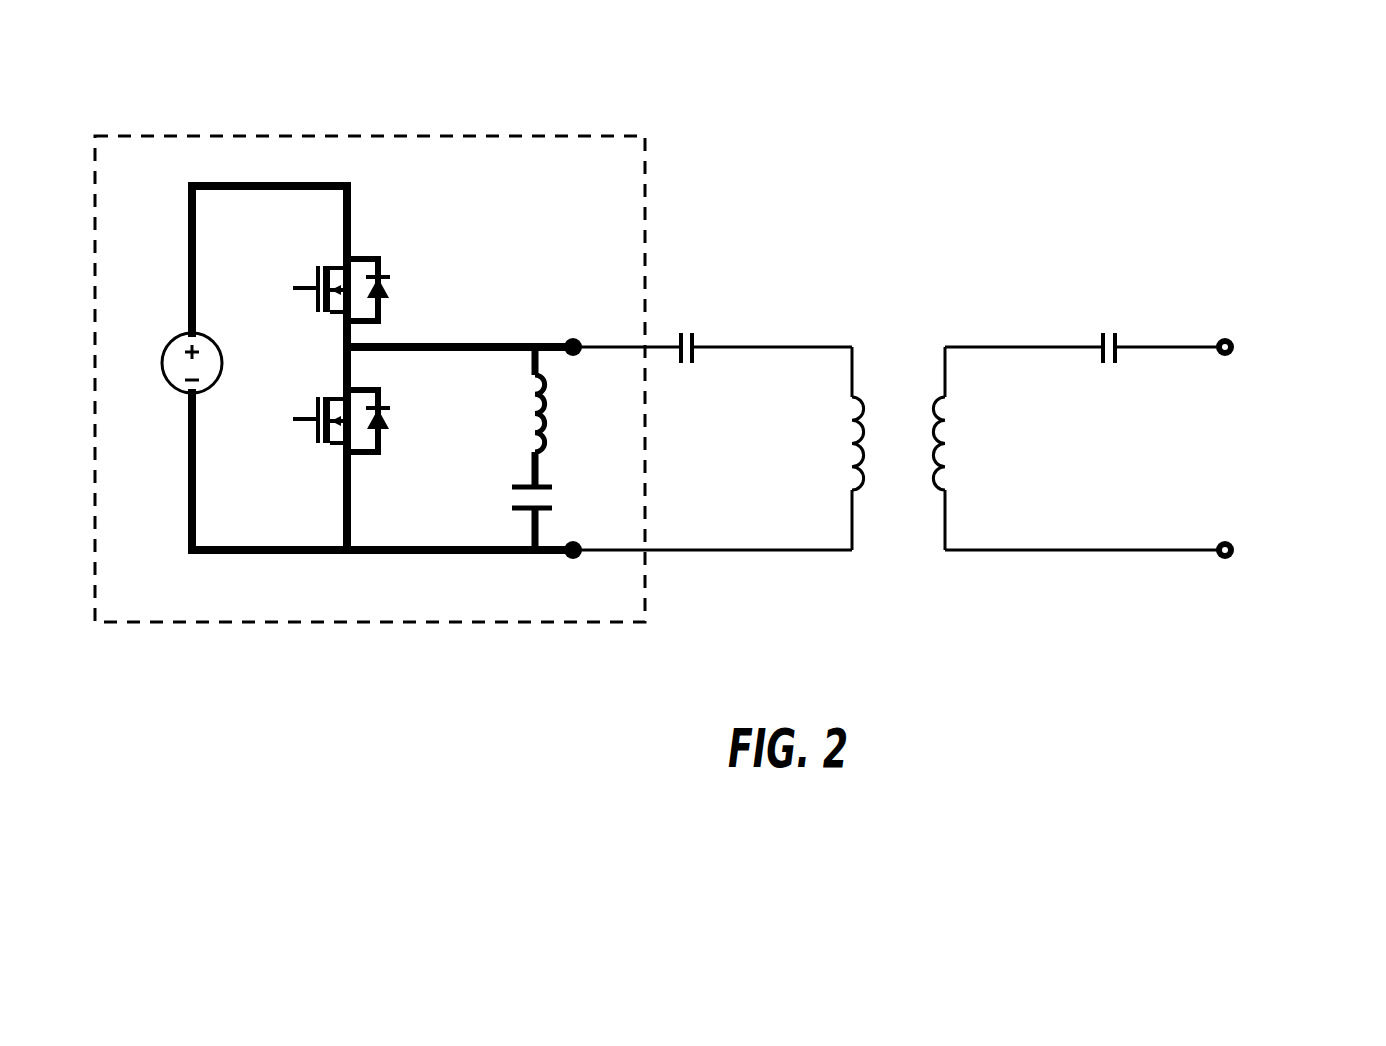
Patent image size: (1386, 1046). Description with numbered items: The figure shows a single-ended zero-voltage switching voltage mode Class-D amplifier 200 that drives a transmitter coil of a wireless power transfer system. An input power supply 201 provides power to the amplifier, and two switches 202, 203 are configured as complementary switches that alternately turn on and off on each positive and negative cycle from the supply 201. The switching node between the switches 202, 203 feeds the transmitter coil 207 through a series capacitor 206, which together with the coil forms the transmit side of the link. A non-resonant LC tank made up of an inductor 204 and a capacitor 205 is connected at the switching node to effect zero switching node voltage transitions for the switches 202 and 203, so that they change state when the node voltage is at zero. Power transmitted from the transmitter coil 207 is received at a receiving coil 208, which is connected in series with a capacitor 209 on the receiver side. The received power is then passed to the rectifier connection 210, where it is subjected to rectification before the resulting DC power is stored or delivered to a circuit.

The single-ended ZVS voltage mode Class-D amplifier 200 is at (601, 122).
The input power supply 201 is at (162, 385).
The switch 202 is at (361, 269).
The switch 203 is at (361, 440).
The inductor of non-resonant LC tank 204 is at (582, 417).
The capacitor of non-resonant LC tank 205 is at (549, 518).
The transmitter capacitor CTX 206 is at (712, 365).
The transmitter coil 207 is at (724, 425).
The receiving coil 208 is at (1076, 425).
The capacitor 209 is at (1152, 365).
The rectification 210 is at (1277, 448).